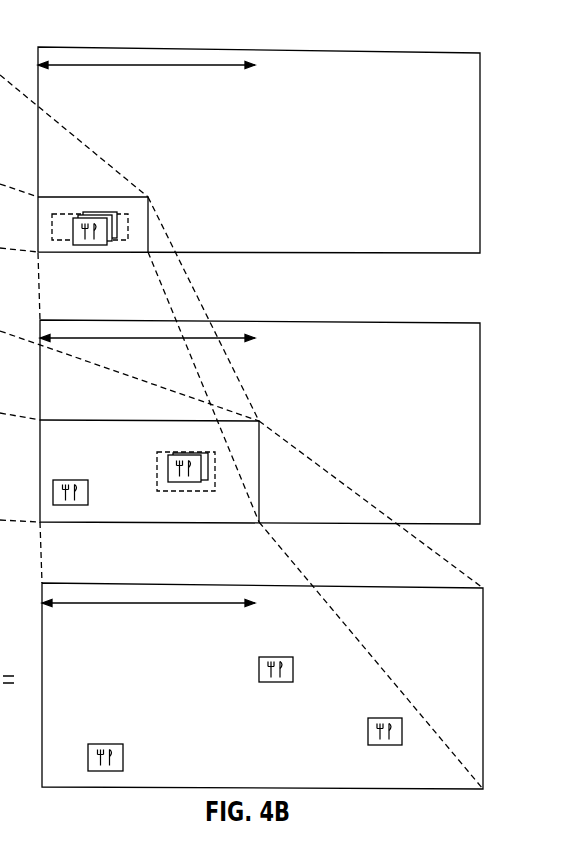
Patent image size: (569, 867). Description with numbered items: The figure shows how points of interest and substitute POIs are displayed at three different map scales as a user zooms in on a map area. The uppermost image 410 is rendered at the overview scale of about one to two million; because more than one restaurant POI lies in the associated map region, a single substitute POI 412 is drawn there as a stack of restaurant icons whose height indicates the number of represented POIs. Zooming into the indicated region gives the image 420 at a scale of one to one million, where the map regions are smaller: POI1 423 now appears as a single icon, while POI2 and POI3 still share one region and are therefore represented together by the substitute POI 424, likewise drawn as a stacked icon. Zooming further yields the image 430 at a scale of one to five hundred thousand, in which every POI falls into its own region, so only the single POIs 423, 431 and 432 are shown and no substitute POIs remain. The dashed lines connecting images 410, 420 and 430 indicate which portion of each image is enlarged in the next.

The image 410 is at (480, 65).
The substitute POI 412 is at (85, 228).
The image 420 is at (480, 334).
The POI1 423 is at (108, 626).
The substitute POI S2 424 is at (174, 471).
The image 430 is at (483, 602).
The POI2 431 is at (297, 669).
The POI3 432 is at (405, 731).